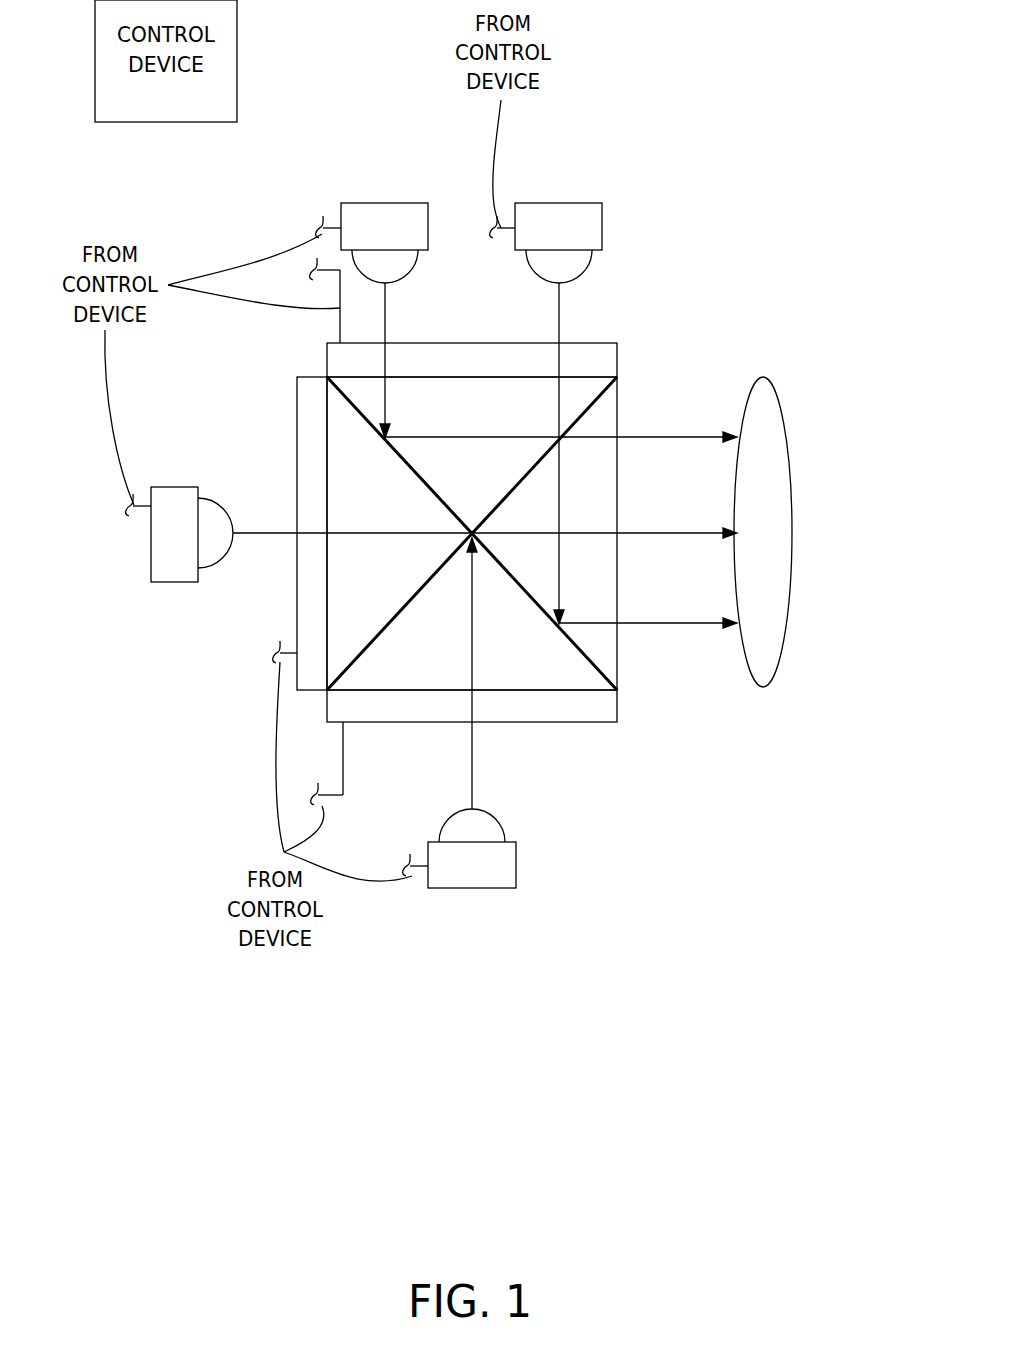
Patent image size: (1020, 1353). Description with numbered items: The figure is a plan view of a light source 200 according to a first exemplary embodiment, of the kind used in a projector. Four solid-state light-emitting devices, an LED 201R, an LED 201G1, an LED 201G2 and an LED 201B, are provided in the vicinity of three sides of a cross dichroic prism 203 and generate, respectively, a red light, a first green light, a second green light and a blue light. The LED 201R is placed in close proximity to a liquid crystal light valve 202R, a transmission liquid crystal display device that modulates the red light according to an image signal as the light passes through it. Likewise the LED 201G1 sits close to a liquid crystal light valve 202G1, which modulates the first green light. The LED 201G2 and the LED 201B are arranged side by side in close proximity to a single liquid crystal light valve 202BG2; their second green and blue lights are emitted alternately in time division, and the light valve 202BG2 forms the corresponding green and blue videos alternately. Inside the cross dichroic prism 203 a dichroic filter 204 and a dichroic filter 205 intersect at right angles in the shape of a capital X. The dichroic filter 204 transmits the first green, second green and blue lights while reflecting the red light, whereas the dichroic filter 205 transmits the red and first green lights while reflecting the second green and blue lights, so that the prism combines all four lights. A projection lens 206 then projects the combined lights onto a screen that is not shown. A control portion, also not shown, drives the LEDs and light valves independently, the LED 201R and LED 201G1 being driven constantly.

The light source 200 is at (832, 243).
The LED 201G2 is at (385, 203).
The LED 201B is at (559, 203).
The LED 201G1 is at (178, 487).
The LED 201R is at (475, 888).
The liquid crystal light valve 202BG2 is at (603, 343).
The liquid crystal light valve 202G1 is at (297, 397).
The liquid crystal light valve 202R is at (556, 722).
The cross dichroic prism 203 is at (493, 387).
The dichroic filter 204 is at (605, 398).
The dichroic filter 205 is at (348, 398).
The projection lens 206 is at (763, 377).